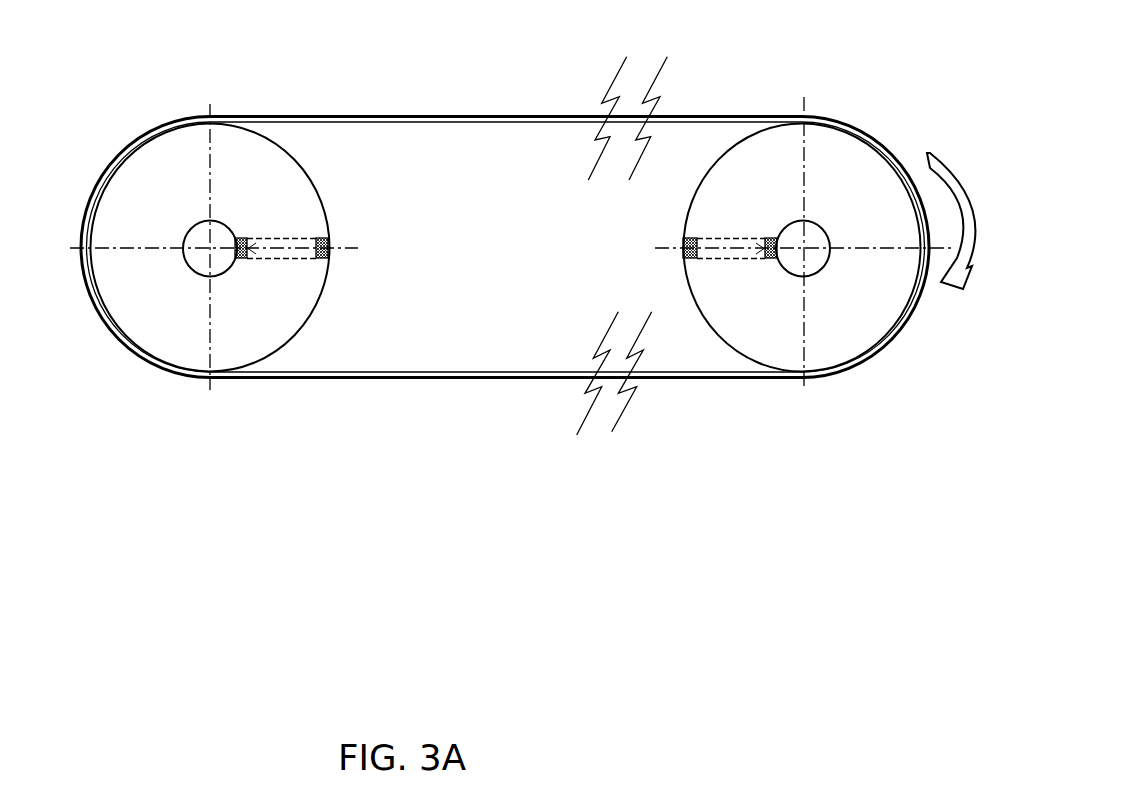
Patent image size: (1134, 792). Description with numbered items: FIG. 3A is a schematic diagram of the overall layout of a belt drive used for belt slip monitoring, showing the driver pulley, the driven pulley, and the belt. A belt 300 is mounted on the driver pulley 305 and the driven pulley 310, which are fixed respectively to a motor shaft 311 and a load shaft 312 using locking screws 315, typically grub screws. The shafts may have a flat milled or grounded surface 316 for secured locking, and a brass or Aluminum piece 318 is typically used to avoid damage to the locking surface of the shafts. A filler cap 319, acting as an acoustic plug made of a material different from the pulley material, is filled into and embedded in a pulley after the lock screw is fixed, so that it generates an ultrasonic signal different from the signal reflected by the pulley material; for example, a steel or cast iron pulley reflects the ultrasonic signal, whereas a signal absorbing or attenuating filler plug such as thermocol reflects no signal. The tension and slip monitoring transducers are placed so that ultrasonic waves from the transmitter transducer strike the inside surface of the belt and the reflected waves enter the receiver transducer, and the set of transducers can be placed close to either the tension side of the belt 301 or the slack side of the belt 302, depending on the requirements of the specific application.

The belt 300 is at (709, 112).
The tension side of the belt 301 is at (488, 123).
The slack side of belt 302 is at (497, 368).
The driver pulley 305 is at (820, 320).
The driven pulley 310 is at (157, 297).
The motor shaft 311 is at (792, 265).
The load shaft 312 is at (204, 277).
The locking screws 315 is at (740, 265).
The flat milled or grounded surface 316 is at (238, 258).
The brass or Aluminum piece 318 is at (248, 258).
The filler cap 319 is at (683, 258).